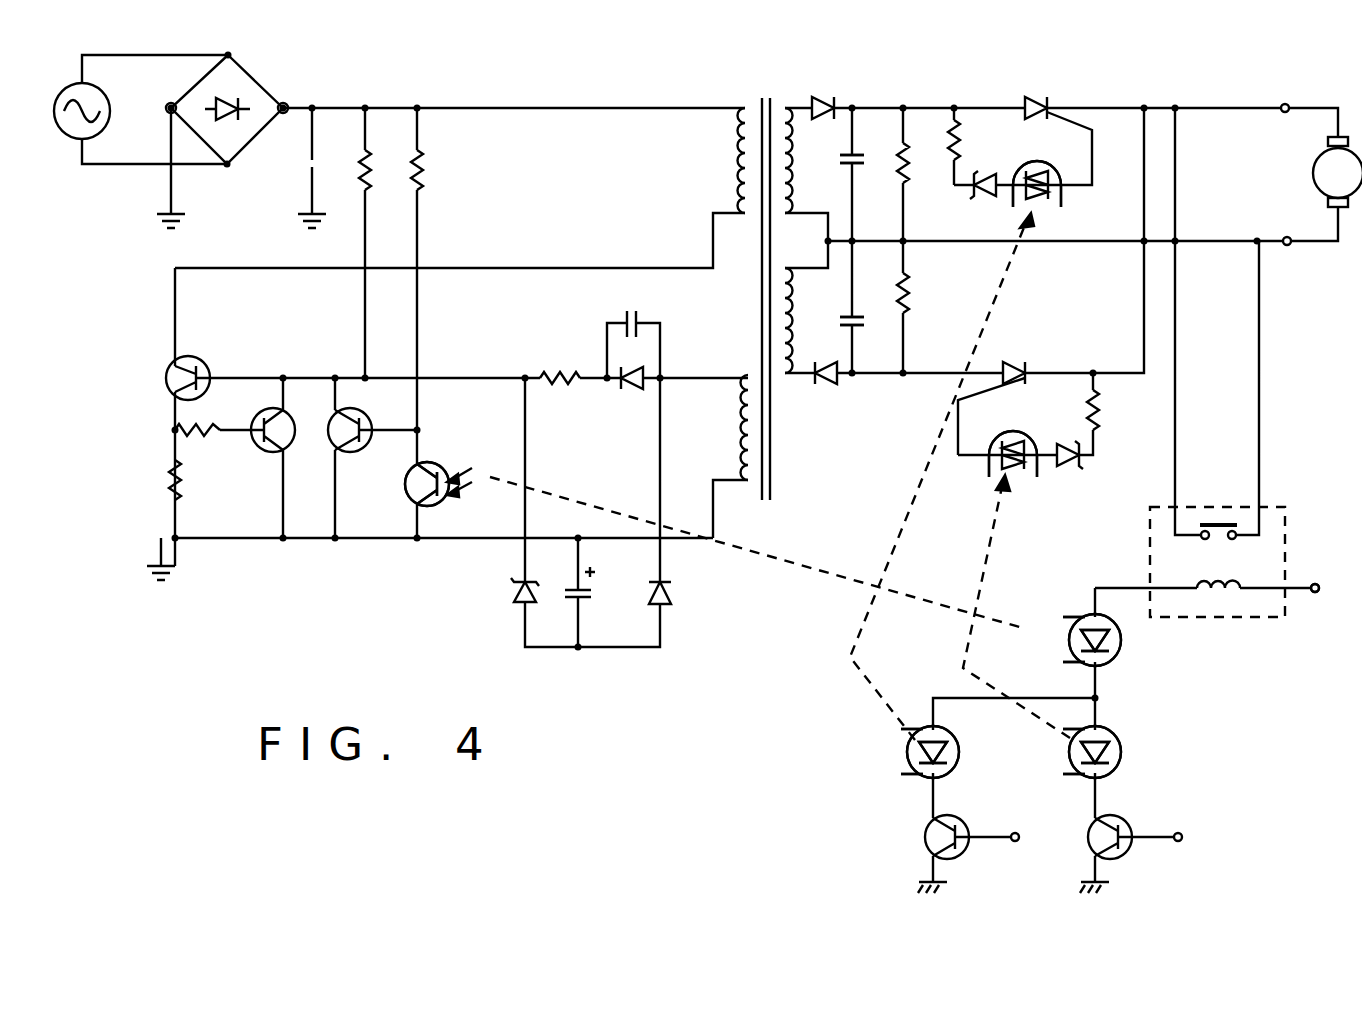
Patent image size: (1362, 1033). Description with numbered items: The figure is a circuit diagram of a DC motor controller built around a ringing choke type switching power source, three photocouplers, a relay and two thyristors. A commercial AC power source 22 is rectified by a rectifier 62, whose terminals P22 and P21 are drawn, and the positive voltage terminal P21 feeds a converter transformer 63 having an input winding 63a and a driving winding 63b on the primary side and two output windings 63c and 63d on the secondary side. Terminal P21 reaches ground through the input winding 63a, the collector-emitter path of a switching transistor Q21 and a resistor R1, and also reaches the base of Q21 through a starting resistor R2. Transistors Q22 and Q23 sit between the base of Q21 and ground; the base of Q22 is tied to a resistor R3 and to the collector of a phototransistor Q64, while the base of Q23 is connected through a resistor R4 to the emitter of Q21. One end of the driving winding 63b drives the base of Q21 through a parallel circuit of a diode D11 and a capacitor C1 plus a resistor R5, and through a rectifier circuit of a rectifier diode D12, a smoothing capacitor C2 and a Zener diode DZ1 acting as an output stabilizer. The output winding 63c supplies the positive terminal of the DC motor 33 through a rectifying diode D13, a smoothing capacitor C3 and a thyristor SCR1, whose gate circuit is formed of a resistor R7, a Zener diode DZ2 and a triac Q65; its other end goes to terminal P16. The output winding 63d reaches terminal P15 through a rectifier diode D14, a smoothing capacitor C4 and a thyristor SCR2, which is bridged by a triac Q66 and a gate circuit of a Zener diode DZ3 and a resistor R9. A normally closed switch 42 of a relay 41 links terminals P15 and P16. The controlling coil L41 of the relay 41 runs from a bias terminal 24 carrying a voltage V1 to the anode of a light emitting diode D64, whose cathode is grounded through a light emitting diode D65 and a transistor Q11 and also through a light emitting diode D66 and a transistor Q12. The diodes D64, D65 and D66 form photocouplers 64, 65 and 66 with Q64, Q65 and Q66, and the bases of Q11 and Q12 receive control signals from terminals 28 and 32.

The commercial AC power source 22 is at (108, 101).
The rectifier 62 is at (263, 94).
The rectifier terminal P22 is at (165, 116).
The positive voltage terminal P21 is at (286, 129).
The resistor R1 is at (158, 480).
The starting resistor R2 is at (382, 152).
The resistor R3 is at (434, 152).
The resistor R4 is at (201, 446).
The resistor R5 is at (560, 357).
The resistor R7 is at (975, 146).
The resistor R9 is at (1111, 410).
The converter transformer 63 is at (766, 94).
The input winding 63a is at (734, 178).
The driving winding 63b is at (734, 408).
The output winding 63c is at (798, 154).
The output winding 63d is at (800, 330).
The capacitor C1 is at (634, 312).
The smoothing capacitor C2 is at (599, 592).
The smoothing capacitor C3 is at (865, 175).
The smoothing capacitor C4 is at (866, 306).
The diode D11 is at (628, 389).
The rectifier diode D12 is at (690, 600).
The rectifying diode D13 is at (822, 94).
The rectifier diode D14 is at (824, 388).
The Zener diode DZ1 is at (519, 594).
The Zener diode DZ2 is at (982, 200).
The Zener diode DZ3 is at (1080, 464).
The switching transistor Q21 is at (207, 360).
The transistor Q22 is at (352, 456).
The transistor Q23 is at (270, 456).
The phototransistor Q64 is at (436, 462).
The triac Q65 is at (1042, 200).
The triac Q66 is at (1014, 489).
The transistor Q11 is at (925, 848).
The transistor Q12 is at (1088, 844).
The light emitting diode D64 is at (1086, 642).
The light emitting diode D65 is at (916, 754).
The light emitting diode D66 is at (1078, 754).
The photocoupler 64 is at (1120, 648).
The photocoupler 65 is at (1062, 168).
The photocoupler 66 is at (1034, 436).
The thyristor SCR1 is at (1040, 97).
The thyristor SCR2 is at (1014, 360).
The terminal P15 is at (1286, 102).
The terminal P16 is at (1288, 245).
The DC motor 33 is at (1316, 160).
The relay 41 is at (1285, 535).
The normally closed switch 42 is at (1216, 520).
The controlling coil L41 is at (1226, 573).
The voltage V1 is at (1332, 591).
The bias terminal 24 is at (1315, 594).
The terminal 28 is at (1015, 843).
The terminal 32 is at (1178, 843).